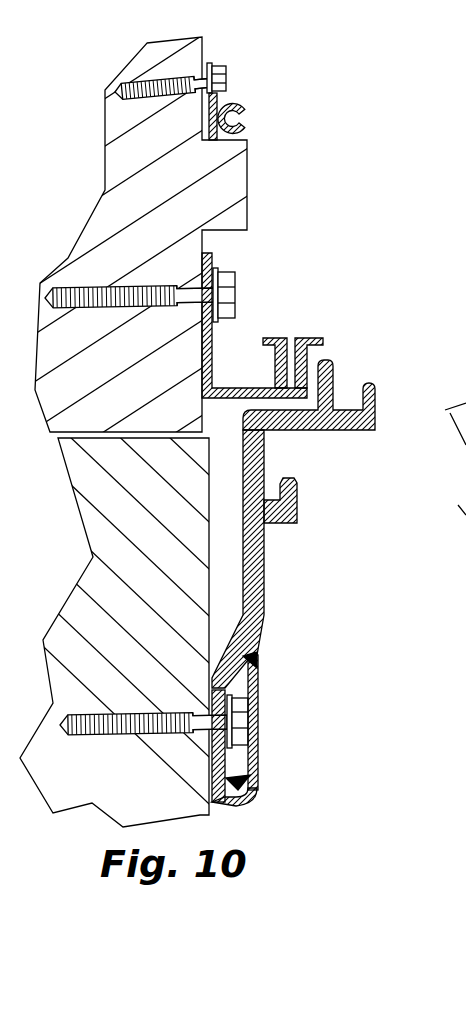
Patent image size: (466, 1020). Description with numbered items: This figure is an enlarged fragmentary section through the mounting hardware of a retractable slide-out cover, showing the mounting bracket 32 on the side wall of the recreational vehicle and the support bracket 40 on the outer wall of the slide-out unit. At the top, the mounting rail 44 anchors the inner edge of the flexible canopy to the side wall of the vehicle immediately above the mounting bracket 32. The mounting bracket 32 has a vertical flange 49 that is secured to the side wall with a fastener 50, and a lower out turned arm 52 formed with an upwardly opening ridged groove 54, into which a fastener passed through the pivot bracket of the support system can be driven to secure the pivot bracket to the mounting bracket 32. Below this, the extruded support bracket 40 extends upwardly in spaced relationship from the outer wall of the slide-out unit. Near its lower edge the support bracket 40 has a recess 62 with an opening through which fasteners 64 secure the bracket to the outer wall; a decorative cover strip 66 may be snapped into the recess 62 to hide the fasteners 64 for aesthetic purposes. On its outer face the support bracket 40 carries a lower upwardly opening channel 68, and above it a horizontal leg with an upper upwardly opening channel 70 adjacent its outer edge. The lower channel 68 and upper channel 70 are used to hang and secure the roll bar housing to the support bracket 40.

The mounting bracket 32 is at (259, 248).
The support bracket 40 is at (298, 626).
The mounting rail 44 is at (252, 80).
The vertical flange 49 is at (234, 318).
The fastener 50 is at (228, 384).
The lower out turned arm 52 is at (235, 386).
The upwardly opening ridged groove 54 is at (294, 343).
The recess 62 is at (255, 763).
The fastener 64 is at (238, 720).
The decorative cover strip 66 is at (255, 728).
The lower upwardly opening channel 68 is at (272, 500).
The upper upwardly opening channel 70 is at (348, 400).